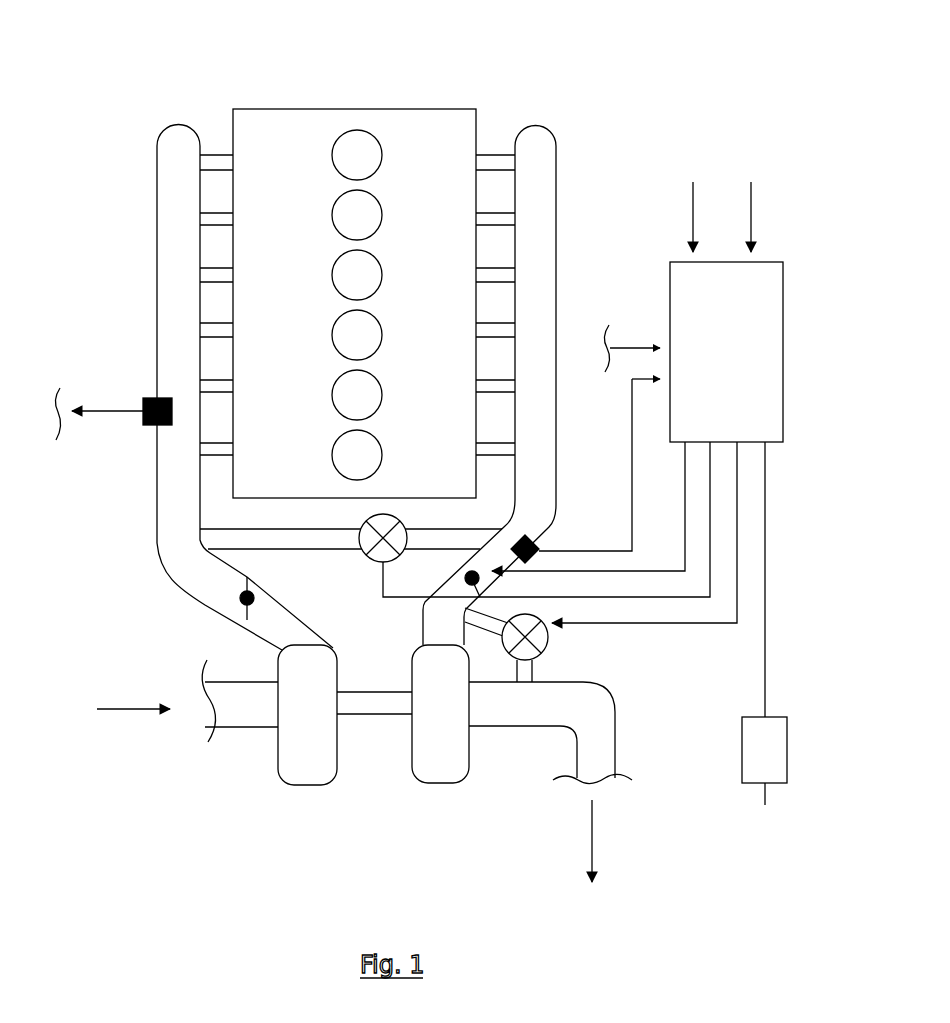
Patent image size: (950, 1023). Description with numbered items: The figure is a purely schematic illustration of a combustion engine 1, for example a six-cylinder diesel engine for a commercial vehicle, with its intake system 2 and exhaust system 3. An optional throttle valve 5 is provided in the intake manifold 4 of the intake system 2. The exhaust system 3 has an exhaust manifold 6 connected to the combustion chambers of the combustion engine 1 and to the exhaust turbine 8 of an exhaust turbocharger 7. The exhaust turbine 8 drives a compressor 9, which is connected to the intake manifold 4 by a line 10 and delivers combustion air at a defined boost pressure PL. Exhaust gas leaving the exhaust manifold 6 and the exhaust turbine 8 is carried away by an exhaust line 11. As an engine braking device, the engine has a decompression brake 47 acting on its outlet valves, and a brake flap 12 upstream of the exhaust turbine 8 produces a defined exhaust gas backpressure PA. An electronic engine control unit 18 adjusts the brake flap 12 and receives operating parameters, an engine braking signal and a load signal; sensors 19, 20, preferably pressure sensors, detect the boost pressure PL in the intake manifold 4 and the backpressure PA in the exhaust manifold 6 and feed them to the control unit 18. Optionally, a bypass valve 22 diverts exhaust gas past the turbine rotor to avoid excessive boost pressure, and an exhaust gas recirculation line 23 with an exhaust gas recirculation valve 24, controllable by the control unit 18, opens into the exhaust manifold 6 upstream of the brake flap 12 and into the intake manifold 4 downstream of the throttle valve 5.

The combustion engine 1 is at (383, 90).
The intake system 2 is at (160, 604).
The exhaust system 3 is at (563, 204).
The intake manifold 4 is at (157, 252).
The throttle valve 5 is at (255, 594).
The exhaust manifold 6 is at (558, 280).
The exhaust turbocharger 7 is at (382, 746).
The exhaust turbine 8 is at (470, 767).
The compressor 9 is at (308, 787).
The line 10 is at (173, 477).
The exhaust line 11 is at (618, 703).
The brake flap 12 is at (460, 567).
The electronic engine control unit 18 is at (746, 357).
The sensor 19 is at (148, 395).
The sensor 20 is at (540, 541).
The bypass valve 22 is at (548, 643).
The exhaust gas recirculation line 23 is at (282, 527).
The exhaust gas recirculation valve 24 is at (405, 517).
The decompression brake 47 is at (779, 762).